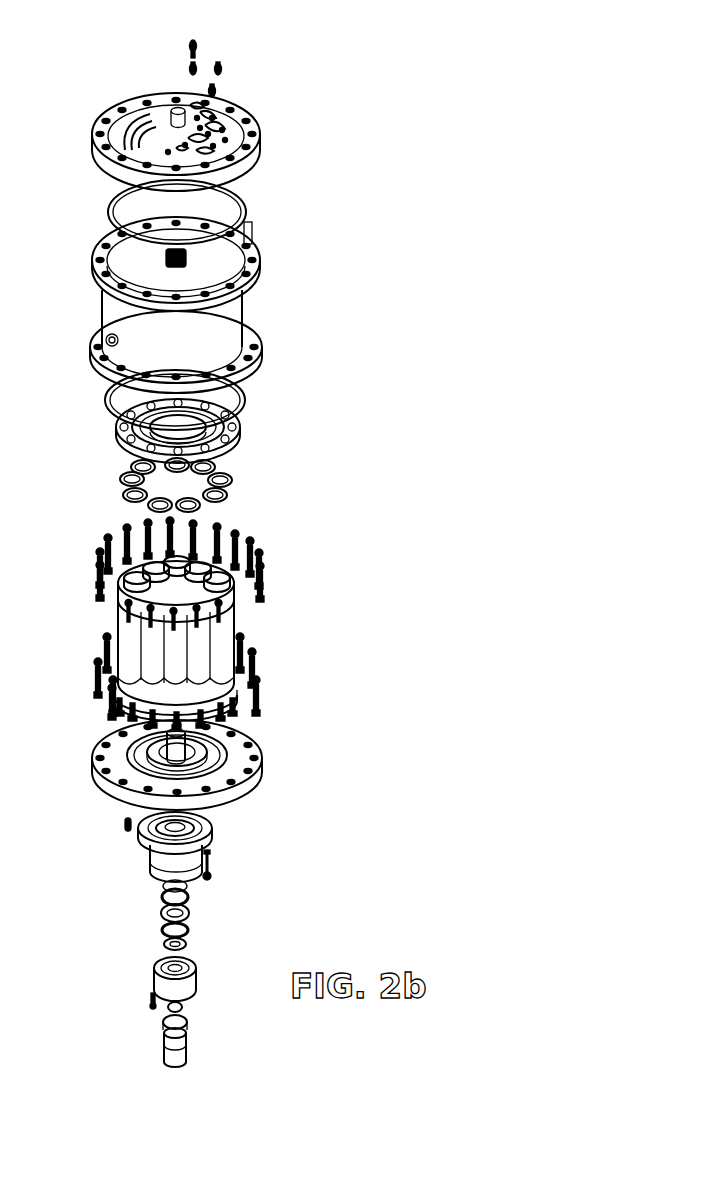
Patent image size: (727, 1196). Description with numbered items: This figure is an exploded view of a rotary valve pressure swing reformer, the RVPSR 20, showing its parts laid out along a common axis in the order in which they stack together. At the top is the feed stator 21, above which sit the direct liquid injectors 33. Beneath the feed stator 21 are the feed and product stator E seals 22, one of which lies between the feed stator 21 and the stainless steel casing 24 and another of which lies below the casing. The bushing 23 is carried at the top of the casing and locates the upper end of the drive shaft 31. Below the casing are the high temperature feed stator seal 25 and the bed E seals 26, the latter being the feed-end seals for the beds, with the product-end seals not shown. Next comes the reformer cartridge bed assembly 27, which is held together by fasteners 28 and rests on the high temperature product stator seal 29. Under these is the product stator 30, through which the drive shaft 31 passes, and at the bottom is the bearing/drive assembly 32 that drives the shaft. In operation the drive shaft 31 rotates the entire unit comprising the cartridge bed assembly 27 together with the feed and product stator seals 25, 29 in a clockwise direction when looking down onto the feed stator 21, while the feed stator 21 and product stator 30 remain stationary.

The RVPSR 20 is at (345, 90).
The feed stator 21 is at (260, 147).
The feed and product stator E seals 22 is at (107, 210).
The bushing 23 is at (167, 257).
The stainless steel casing 24 is at (97, 275).
The high temperature feed stator seal 25 is at (117, 440).
The bed E seals 26 is at (120, 478).
The reformer cartridge bed assembly 27 is at (227, 623).
The fasteners 28 is at (253, 543).
The high temperature product stator seal 29 is at (107, 693).
The product stator 30 is at (97, 772).
The drive shaft 31 is at (173, 738).
The bearing/drive assembly 32 is at (230, 810).
The direct liquid injectors 33 is at (198, 62).